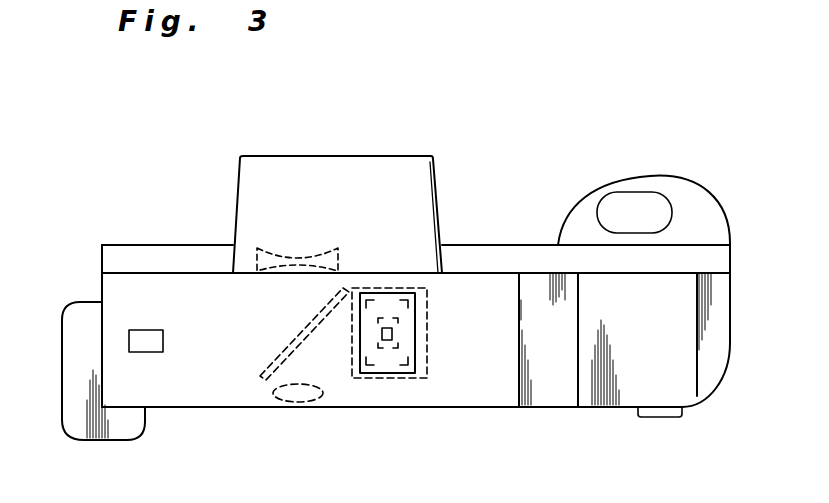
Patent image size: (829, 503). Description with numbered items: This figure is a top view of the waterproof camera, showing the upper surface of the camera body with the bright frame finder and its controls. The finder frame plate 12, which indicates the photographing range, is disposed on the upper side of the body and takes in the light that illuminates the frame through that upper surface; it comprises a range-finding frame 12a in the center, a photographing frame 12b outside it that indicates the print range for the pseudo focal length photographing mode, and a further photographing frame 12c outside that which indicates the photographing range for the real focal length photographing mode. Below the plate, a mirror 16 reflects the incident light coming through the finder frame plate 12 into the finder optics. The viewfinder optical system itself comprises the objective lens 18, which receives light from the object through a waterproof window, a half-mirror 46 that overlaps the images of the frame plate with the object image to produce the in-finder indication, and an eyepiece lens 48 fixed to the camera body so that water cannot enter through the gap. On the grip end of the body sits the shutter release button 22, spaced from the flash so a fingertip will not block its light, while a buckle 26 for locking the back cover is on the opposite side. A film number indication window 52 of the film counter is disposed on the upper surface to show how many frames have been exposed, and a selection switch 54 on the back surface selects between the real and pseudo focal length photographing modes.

The finder frame plate 12 is at (417, 358).
The range-finding frame 12a is at (388, 327).
The photographing frame 12b is at (380, 318).
The photographing frame 12c is at (406, 302).
The mirror 16 is at (425, 330).
The objective lens 18 is at (262, 248).
The shutter release button 22 is at (617, 207).
The buckle 26 is at (78, 415).
The half-mirror 46 is at (303, 334).
The eyepiece lens 48 is at (280, 406).
The film number indication window 52 is at (143, 337).
The selection switch 54 is at (673, 414).